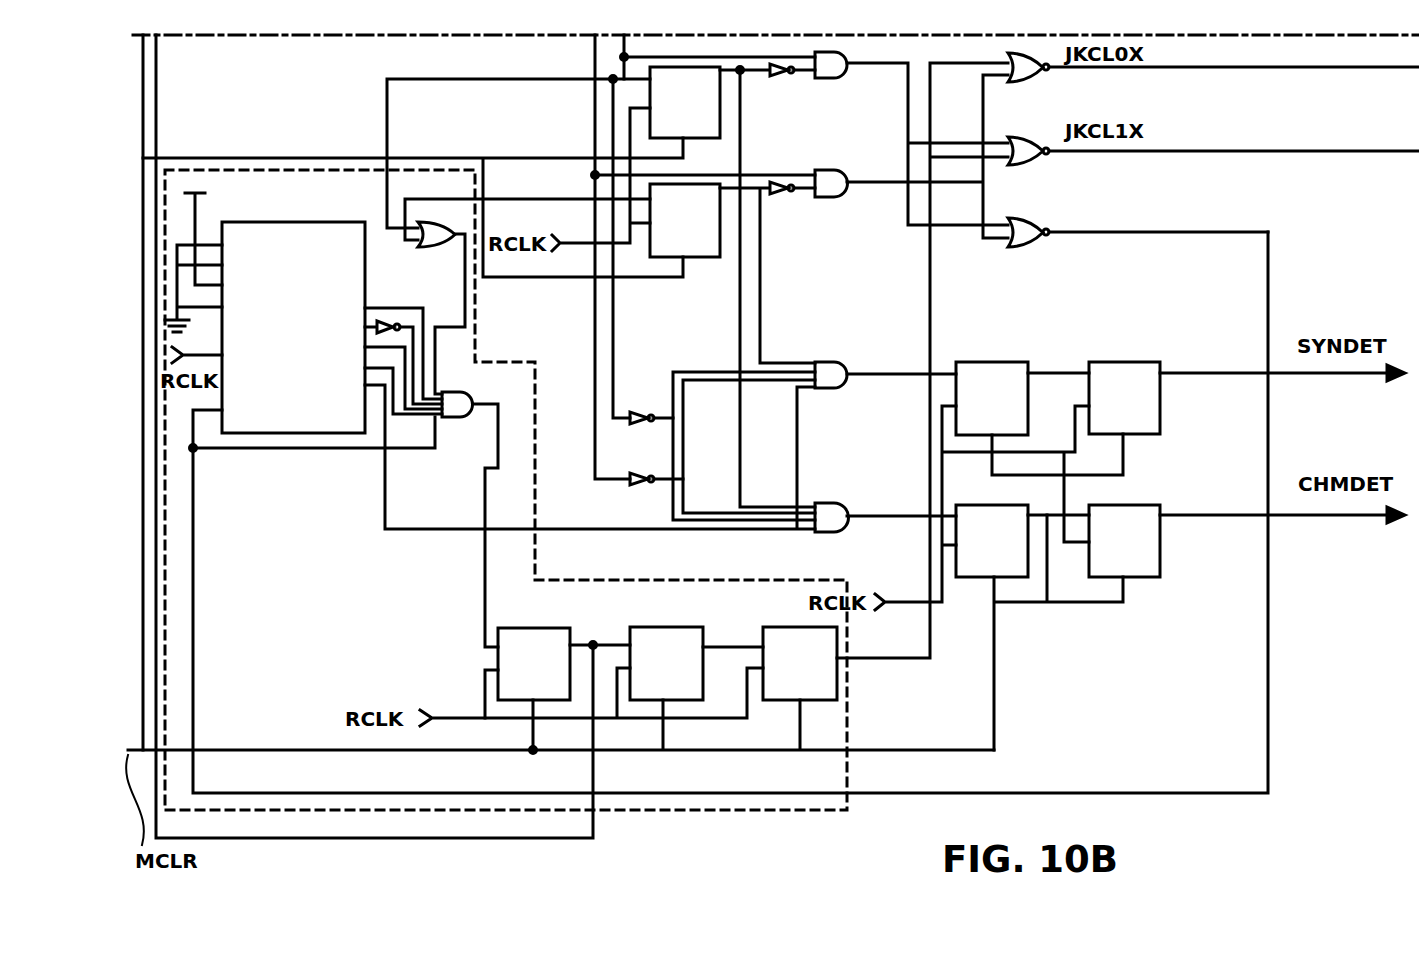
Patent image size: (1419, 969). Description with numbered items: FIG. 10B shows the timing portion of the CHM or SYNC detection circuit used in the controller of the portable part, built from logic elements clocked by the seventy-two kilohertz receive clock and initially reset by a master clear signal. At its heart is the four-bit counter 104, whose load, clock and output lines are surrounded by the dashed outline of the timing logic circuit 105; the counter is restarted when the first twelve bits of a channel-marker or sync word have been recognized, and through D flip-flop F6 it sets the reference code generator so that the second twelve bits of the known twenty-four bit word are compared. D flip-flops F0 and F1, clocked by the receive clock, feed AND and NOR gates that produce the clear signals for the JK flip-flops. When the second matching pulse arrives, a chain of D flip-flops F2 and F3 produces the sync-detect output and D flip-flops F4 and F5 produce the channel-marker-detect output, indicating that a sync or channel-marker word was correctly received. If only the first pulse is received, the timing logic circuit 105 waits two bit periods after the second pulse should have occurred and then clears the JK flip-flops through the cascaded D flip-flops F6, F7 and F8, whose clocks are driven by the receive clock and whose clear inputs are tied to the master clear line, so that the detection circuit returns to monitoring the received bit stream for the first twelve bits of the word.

The 4-bit counter 104 is at (279, 222).
The timing logic circuit 105 is at (777, 811).
The D flip-flop F0 is at (685, 104).
The D flip-flop F1 is at (685, 221).
The D flip-flop F2 is at (992, 399).
The D flip-flop F3 is at (1124, 399).
The D flip-flop F4 is at (992, 542).
The D flip-flop F5 is at (1124, 542).
The D flip-flop F6 is at (534, 665).
The D flip-flop F7 is at (666, 664).
The D flip-flop F8 is at (800, 664).